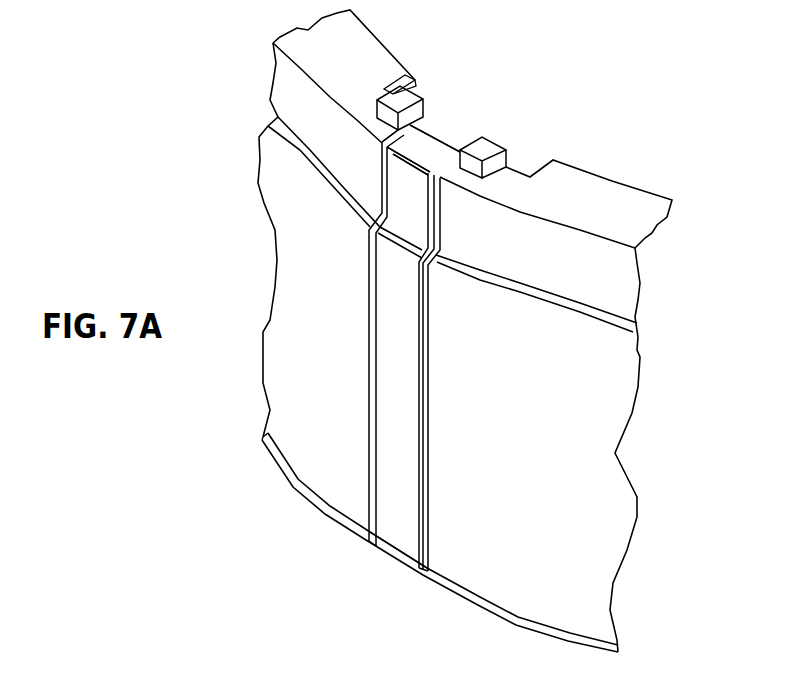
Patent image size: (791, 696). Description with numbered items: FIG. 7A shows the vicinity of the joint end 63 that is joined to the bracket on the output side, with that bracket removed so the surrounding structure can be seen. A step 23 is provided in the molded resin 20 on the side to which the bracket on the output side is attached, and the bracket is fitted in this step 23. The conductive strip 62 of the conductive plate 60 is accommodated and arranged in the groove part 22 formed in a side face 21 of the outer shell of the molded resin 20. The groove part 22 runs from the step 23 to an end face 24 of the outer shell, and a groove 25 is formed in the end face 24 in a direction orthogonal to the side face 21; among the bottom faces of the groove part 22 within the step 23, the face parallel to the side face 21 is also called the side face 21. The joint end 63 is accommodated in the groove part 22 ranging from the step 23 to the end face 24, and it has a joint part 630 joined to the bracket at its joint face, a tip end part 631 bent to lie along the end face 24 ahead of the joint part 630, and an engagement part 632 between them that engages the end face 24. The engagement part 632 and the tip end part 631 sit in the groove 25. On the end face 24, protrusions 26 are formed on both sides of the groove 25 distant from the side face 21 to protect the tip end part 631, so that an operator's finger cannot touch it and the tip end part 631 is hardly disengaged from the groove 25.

The molded resin 20 is at (620, 403).
The side face 21 is at (612, 523).
The groove part 22 is at (388, 170).
The step 23 is at (614, 277).
The end face 24 is at (640, 218).
The groove 25 is at (377, 100).
The protrusions 26 is at (408, 100).
The conductive plate 60 is at (336, 321).
The conductive strip 62 is at (394, 463).
The joint end 63 is at (463, 231).
The joint part 630 is at (398, 197).
The tip end part 631 is at (426, 132).
The engagement part 632 is at (427, 157).